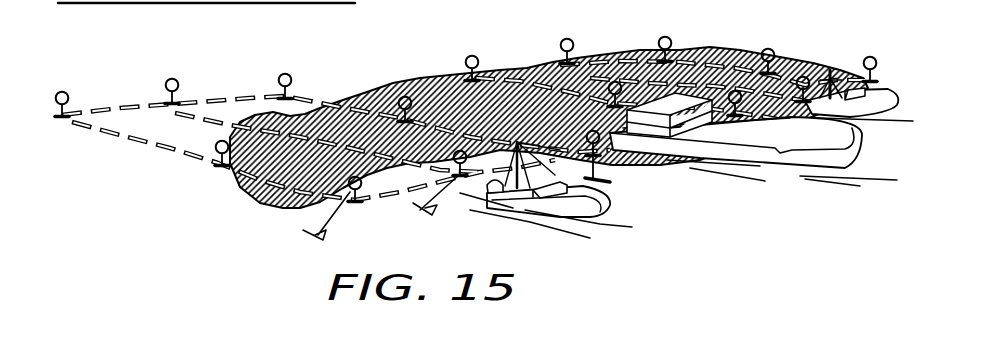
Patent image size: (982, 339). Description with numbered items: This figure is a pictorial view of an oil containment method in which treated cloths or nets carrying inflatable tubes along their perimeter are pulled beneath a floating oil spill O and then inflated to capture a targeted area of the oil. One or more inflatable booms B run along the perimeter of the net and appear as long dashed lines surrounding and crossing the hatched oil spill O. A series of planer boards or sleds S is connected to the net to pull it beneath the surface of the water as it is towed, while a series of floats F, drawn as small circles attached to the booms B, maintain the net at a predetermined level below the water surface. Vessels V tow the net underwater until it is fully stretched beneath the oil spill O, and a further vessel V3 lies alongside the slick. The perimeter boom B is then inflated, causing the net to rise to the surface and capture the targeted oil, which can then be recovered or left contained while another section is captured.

The oil spill O is at (407, 82).
The inflatable boom B is at (188, 155).
The float F is at (65, 88).
The planer board or sled S is at (308, 238).
The vessel V is at (612, 198).
The vessel V3 is at (822, 163).